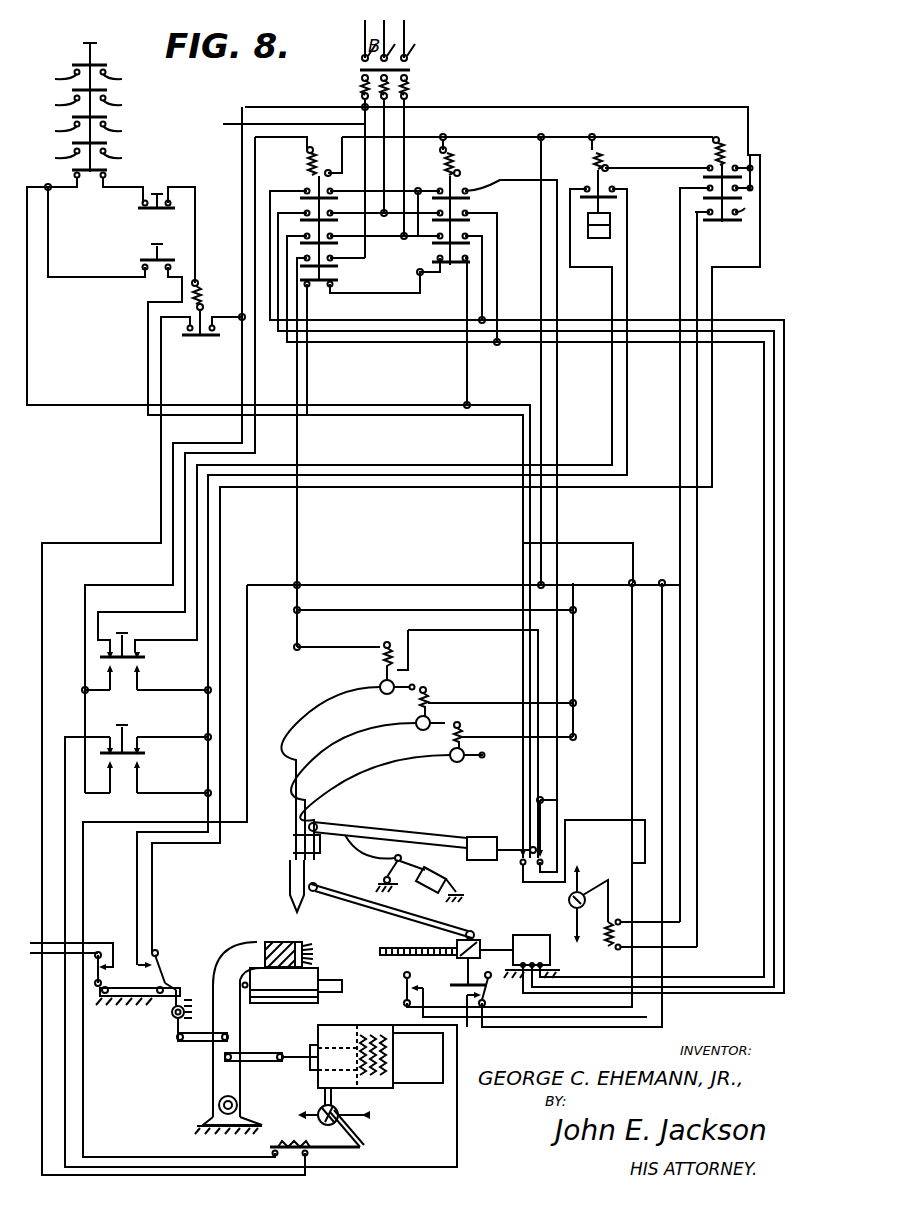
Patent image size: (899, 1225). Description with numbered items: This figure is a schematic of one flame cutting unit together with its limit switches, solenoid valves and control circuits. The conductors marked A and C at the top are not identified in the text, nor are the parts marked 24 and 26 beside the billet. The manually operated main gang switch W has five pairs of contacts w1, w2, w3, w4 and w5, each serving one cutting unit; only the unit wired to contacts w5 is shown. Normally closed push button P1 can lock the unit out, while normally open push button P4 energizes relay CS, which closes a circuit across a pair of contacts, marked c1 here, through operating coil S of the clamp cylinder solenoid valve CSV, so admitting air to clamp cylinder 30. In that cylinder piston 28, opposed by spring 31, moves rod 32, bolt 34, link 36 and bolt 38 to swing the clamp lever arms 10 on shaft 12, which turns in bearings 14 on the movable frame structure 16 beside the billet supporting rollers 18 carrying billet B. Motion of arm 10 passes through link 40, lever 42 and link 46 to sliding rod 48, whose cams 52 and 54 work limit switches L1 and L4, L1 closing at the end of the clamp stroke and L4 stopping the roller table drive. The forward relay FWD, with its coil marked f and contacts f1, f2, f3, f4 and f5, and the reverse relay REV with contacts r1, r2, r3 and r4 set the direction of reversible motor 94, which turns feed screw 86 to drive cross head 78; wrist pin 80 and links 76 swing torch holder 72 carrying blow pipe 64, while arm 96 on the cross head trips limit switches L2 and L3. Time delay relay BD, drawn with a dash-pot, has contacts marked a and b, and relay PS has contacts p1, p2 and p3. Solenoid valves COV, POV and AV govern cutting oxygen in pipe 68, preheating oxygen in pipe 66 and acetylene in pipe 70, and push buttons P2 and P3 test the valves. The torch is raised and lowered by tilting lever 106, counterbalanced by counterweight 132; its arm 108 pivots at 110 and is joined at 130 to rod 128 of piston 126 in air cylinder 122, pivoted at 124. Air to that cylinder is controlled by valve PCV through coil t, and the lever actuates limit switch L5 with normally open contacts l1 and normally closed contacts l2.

The main control switch W is at (88, 65).
The pair of contacts w1 is at (55, 75).
The pair of contacts w2 is at (55, 100).
The pair of contacts w3 is at (55, 126).
The pair of contacts w4 is at (55, 153).
The pair of contacts w5 is at (72, 175).
The supply line A is at (361, 46).
The supply line C is at (411, 129).
The push button switch P1 is at (157, 195).
The push button switch P4 is at (152, 256).
The control switch contact c1 is at (186, 327).
The relay CS is at (200, 321).
The forward motion relay FWD is at (281, 156).
The forward contactor coil f is at (312, 150).
The pair of contacts f1 is at (307, 190).
The pair of contacts f2 is at (307, 213).
The pair of contacts f3 is at (307, 236).
The pair of contacts f4 is at (303, 250).
The pair of contacts f5 is at (330, 288).
The reverse contact relay REV is at (485, 154).
The pair of contacts r1 is at (498, 516).
The pair of contacts r2 is at (480, 213).
The pair of contacts r3 is at (478, 236).
The pair of contacts r4 is at (470, 258).
The time delay relay BD is at (582, 186).
The relay contact a is at (608, 167).
The pair of contacts b is at (614, 188).
The relay PS is at (705, 179).
The pair of contacts p1 is at (740, 168).
The pair of contacts p2 is at (740, 188).
The pair of contacts p3 is at (740, 212).
The push button switch P2 is at (128, 650).
The push button switch P3 is at (140, 758).
The solenoid valve COV is at (380, 682).
The solenoid valve POV is at (415, 720).
The solenoid valve AV is at (448, 755).
The pipe 68 is at (412, 686).
The pipe 66 is at (433, 721).
The pipe 70 is at (485, 755).
The blow pipe 64 is at (290, 884).
The holder 72 is at (293, 843).
The arm 108 is at (335, 819).
The torch tilting lever 106 is at (352, 833).
The pivot 130 is at (398, 854).
The pivot 110 is at (383, 883).
The piston rod 128 is at (415, 862).
The air cylinder 122 is at (425, 886).
The pivot 124 is at (463, 898).
The counterweight 132 is at (488, 836).
The piston 126 is at (470, 850).
The limit switch L5 is at (559, 831).
The pair of contacts l1 is at (550, 852).
The pair of contacts l2 is at (565, 865).
The positioning cylinder valve PCV is at (590, 895).
The operating coil t is at (610, 947).
The reversible electric motor 94 is at (520, 935).
The cross head 78 is at (472, 940).
The arm 96 is at (466, 976).
The wrist pin 80 is at (425, 948).
The feed screw 86 is at (390, 956).
The links 76 is at (370, 905).
The limit switch L2 is at (405, 992).
The limit switch L3 is at (489, 999).
The limit switch L4 is at (103, 958).
The limit switch L1 is at (158, 952).
The rod 48 is at (128, 998).
The cam 52 is at (108, 998).
The cam 54 is at (156, 998).
The link 46 is at (170, 985).
The lever 42 is at (185, 1008).
The link 40 is at (192, 1042).
The bolt 38 is at (232, 1062).
The link 36 is at (250, 1060).
The bolt 34 is at (282, 1062).
The rod 32 is at (300, 1053).
The clamp lever arms 10 is at (237, 950).
The shaft 12 is at (220, 1105).
The movable frame structure 16 is at (200, 1125).
The bearings 14 is at (220, 1112).
The billet supporting rollers 18 is at (278, 1000).
The billet B is at (272, 942).
The brake disc 24 is at (300, 942).
The brake spring 26 is at (313, 956).
The cylinder 30 is at (340, 1020).
The piston 28 is at (357, 1075).
The spring 31 is at (396, 1058).
The clamp cylinder solenoid valve CSV is at (345, 1122).
The operating coil S is at (292, 1145).